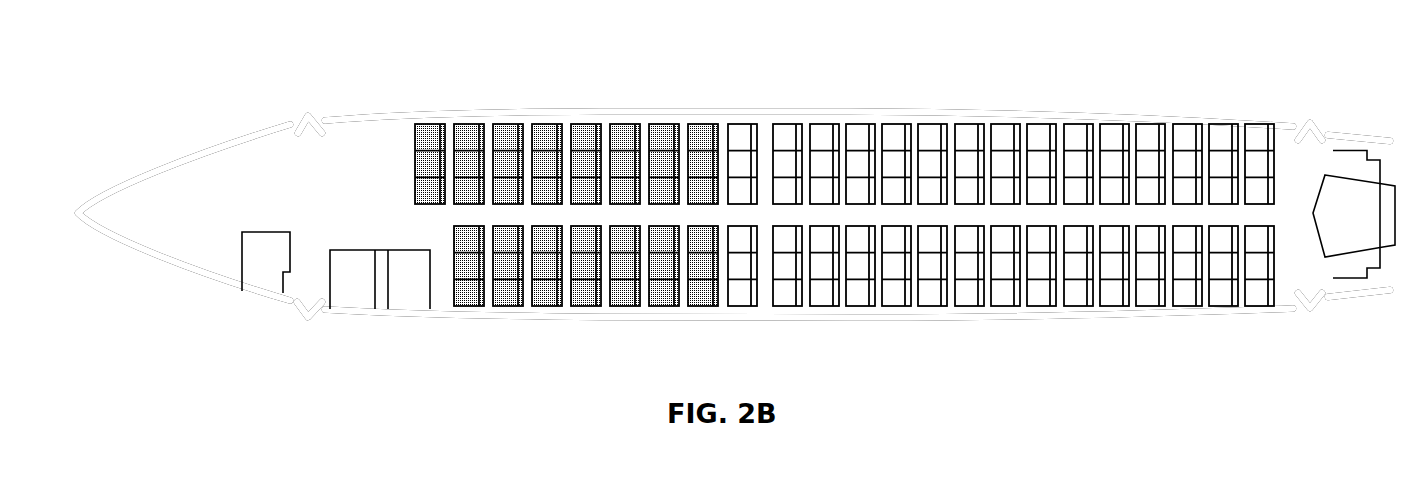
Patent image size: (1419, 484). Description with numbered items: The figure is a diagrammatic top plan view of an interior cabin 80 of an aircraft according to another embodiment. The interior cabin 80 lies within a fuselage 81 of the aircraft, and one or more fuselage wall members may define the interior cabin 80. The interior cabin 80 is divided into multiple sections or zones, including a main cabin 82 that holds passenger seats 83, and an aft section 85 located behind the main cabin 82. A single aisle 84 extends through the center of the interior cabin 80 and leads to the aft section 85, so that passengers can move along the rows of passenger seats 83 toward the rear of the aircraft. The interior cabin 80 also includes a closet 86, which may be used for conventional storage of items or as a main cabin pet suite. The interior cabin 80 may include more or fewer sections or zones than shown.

The interior cabin 80 is at (736, 202).
The fuselage 81 is at (532, 114).
The main cabin 82 is at (469, 140).
The passenger seats 83 is at (740, 145).
The single aisle 84 is at (866, 210).
The aft section 85 is at (1294, 147).
The closet 86 is at (405, 292).